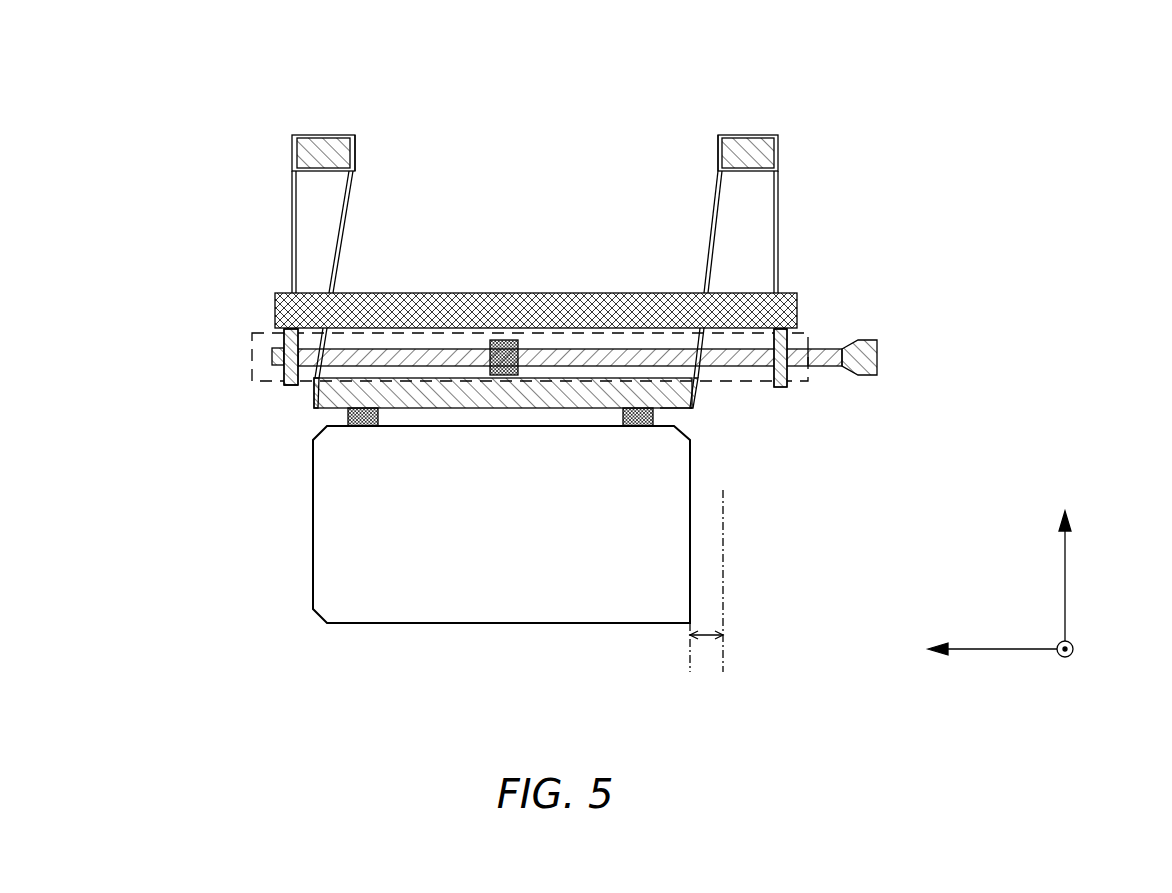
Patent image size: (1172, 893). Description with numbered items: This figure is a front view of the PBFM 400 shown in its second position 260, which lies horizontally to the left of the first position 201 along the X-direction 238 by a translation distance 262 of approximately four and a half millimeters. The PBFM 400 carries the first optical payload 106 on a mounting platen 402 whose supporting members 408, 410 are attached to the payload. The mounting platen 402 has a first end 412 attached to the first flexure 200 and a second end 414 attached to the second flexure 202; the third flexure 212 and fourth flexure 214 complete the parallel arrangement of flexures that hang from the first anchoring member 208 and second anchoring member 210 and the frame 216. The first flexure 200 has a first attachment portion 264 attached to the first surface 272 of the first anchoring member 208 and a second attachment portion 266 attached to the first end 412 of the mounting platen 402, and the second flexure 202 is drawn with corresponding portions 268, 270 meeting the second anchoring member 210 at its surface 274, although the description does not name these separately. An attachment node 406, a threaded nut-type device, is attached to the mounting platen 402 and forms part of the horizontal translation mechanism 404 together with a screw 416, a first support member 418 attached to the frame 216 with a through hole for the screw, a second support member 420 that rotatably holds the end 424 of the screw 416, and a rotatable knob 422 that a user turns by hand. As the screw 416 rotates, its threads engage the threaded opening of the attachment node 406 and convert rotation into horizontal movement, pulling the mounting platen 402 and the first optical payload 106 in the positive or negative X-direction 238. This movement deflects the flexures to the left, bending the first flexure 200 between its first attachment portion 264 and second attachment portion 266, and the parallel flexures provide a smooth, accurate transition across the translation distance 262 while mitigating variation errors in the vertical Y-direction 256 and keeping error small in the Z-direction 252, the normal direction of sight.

The PBFM 400 is at (632, 375).
The first anchoring member 208 is at (300, 137).
The second anchoring member 210 is at (752, 137).
The first surface of the first anchoring member 272 is at (337, 137).
The second flexure insert 274 is at (735, 137).
The first attachment portion 264 is at (355, 152).
The second post inner edge 268 is at (719, 143).
The third flexure 212 is at (292, 243).
The fourth flexure 214 is at (780, 244).
The first flexure 200 is at (342, 243).
The second flexure 202 is at (705, 242).
The second attachment portion 266 is at (292, 388).
The second arm lower end 270 is at (693, 392).
The frame 216 is at (432, 292).
The attachment node 406 is at (505, 340).
The end of the screw 424 is at (285, 345).
The horizontal translation mechanism 404 is at (272, 354).
The second support member 420 is at (284, 382).
The first end of the mounting platen 412 is at (312, 410).
The screw 416 is at (815, 347).
The first support member 418 is at (790, 387).
The rotatable knob 422 is at (880, 360).
The mounting platen 402 is at (593, 390).
The second end of the mounting platen 414 is at (680, 400).
The supporting member 408 is at (363, 426).
The supporting member 410 is at (637, 426).
The first optical payload 106 is at (489, 551).
The second position 260 is at (689, 665).
The first position 201 is at (724, 665).
The translation distance 262 is at (700, 640).
The Y-direction 256 is at (1065, 565).
The X-direction 238 is at (1000, 650).
The Z-direction 252 is at (1070, 658).